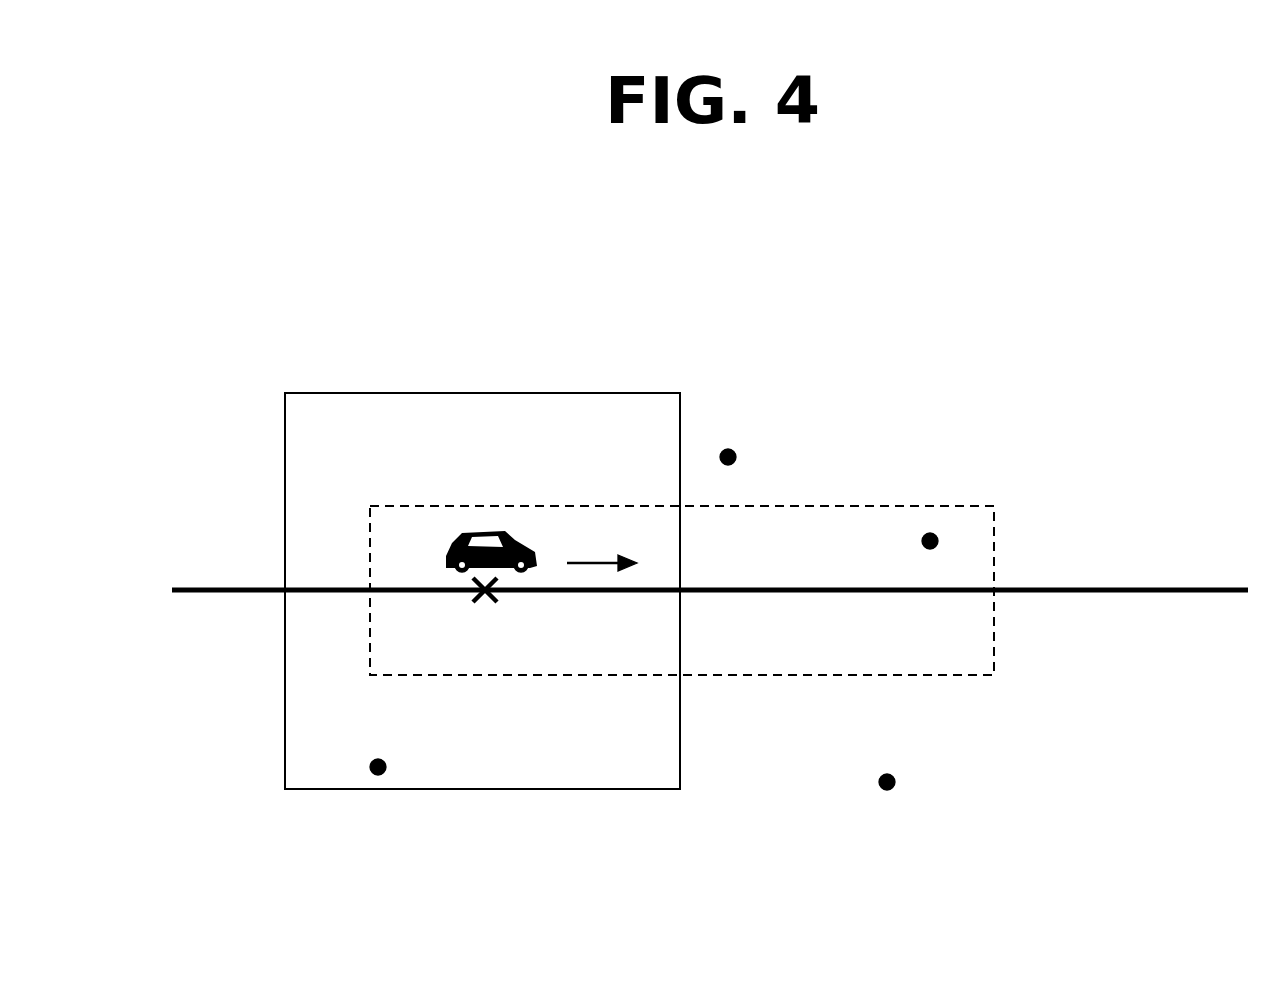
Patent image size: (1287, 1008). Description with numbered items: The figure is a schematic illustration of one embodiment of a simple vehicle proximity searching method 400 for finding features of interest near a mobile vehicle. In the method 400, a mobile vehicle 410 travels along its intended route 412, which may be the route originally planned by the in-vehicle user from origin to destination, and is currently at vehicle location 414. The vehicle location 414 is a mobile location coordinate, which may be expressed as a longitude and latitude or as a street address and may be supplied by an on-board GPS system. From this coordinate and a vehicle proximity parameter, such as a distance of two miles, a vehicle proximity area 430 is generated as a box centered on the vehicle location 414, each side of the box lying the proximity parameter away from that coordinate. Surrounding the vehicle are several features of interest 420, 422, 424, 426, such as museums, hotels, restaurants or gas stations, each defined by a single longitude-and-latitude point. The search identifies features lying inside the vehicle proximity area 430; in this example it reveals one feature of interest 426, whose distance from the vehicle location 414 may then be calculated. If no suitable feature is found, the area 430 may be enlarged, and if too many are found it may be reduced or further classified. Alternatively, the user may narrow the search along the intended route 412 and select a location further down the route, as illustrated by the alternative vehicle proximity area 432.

The vehicle proximity searching method 400 is at (236, 349).
The mobile vehicle 410 is at (481, 532).
The intended route 412 is at (1178, 590).
The vehicle location 414 is at (490, 602).
The feature of interest 420 is at (728, 450).
The feature of interest 422 is at (930, 533).
The feature of interest 424 is at (890, 790).
The feature of interest 426 is at (380, 775).
The vehicle proximity area 430 is at (680, 790).
The alternative vehicle proximity area 432 is at (994, 675).